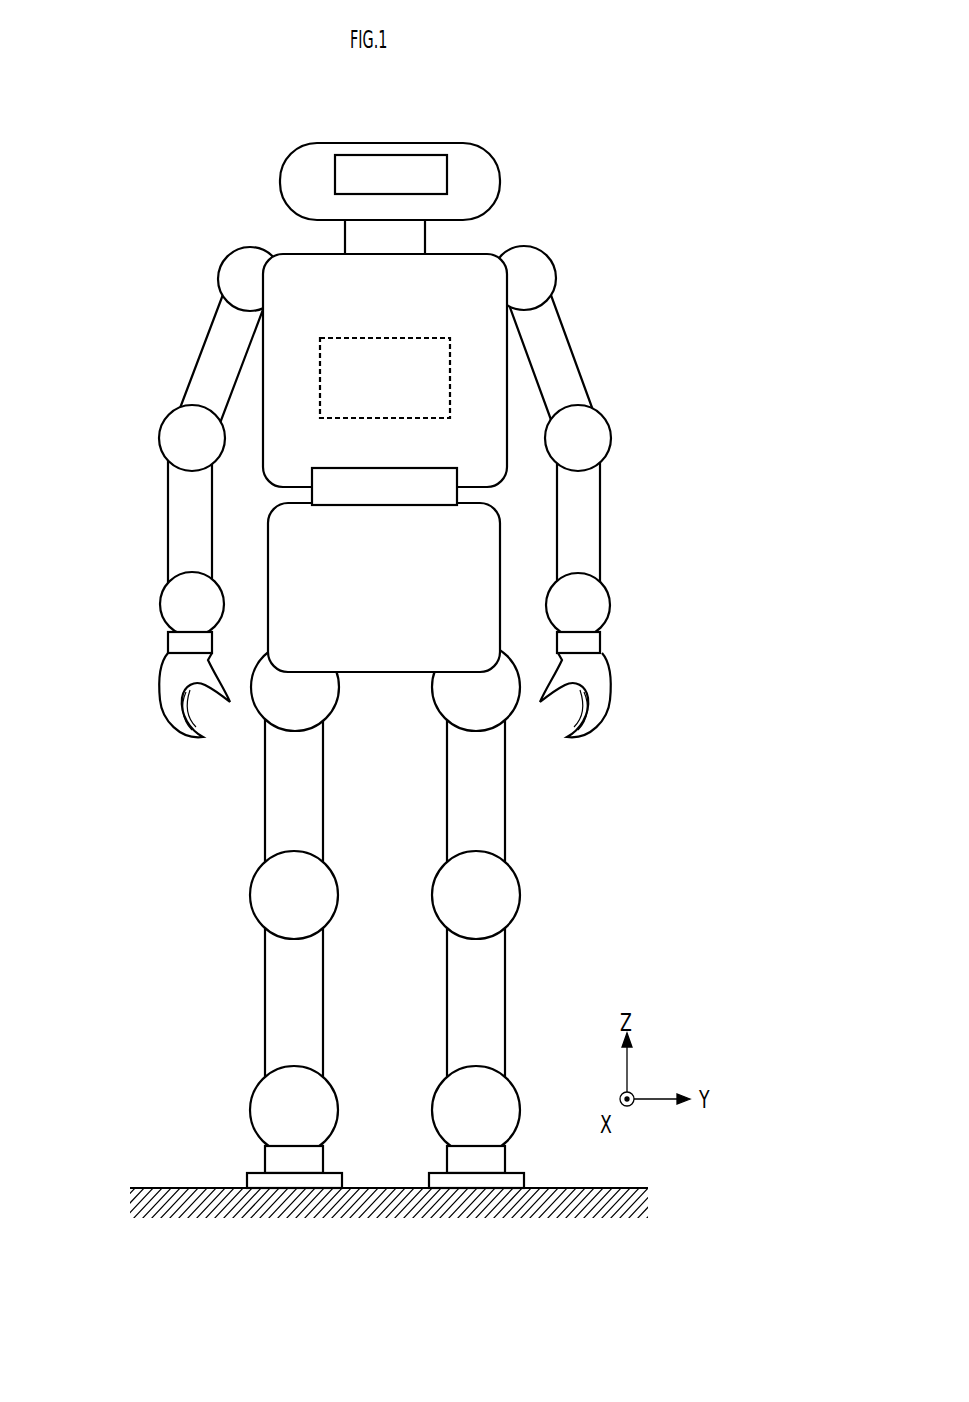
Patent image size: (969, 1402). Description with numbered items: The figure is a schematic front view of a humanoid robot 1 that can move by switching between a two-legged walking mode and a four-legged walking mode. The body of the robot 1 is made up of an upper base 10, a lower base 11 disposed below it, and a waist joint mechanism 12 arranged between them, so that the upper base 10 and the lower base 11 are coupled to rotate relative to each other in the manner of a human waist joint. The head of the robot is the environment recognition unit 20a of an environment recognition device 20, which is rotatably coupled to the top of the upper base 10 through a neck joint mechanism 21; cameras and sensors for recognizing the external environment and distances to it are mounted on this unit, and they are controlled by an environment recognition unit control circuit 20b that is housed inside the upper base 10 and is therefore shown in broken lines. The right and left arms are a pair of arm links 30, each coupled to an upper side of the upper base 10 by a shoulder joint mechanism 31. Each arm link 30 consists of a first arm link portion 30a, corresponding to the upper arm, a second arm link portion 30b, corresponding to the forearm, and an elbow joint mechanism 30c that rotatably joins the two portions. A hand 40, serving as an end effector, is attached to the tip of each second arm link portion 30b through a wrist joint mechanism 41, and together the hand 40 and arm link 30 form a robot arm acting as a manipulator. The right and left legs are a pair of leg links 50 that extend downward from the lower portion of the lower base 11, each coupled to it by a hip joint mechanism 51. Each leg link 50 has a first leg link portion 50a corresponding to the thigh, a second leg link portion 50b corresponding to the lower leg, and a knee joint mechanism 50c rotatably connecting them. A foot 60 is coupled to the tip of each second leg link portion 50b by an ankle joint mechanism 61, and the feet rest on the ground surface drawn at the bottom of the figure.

The robot 1 is at (583, 69).
The upper base 10 is at (490, 433).
The lower base 11 is at (475, 567).
The waist joint mechanism 12 is at (442, 495).
The environment recognition device 20 is at (423, 130).
The environment recognition unit 20a is at (490, 168).
The environment recognition unit control circuit 20b is at (397, 336).
The neck joint mechanism 21 is at (412, 236).
The arm link 30 is at (382, 442).
The first arm link portion 30a is at (193, 360).
The second arm link portion 30b is at (172, 497).
The elbow joint mechanism 30c is at (180, 438).
The shoulder joint mechanism 31 is at (230, 270).
The hand 40 is at (165, 683).
The wrist joint mechanism 41 is at (175, 606).
The leg link 50 is at (381, 898).
The first leg link portion 50a is at (267, 820).
The second leg link portion 50b is at (270, 955).
The knee joint mechanism 50c is at (270, 900).
The hip joint mechanism 51 is at (268, 707).
The foot 60 is at (252, 1170).
The ankle joint mechanism 61 is at (270, 1100).